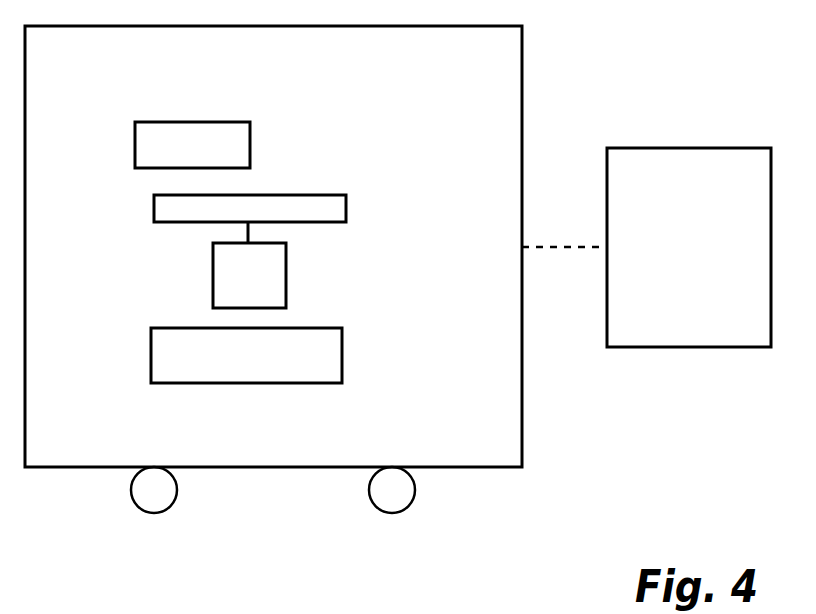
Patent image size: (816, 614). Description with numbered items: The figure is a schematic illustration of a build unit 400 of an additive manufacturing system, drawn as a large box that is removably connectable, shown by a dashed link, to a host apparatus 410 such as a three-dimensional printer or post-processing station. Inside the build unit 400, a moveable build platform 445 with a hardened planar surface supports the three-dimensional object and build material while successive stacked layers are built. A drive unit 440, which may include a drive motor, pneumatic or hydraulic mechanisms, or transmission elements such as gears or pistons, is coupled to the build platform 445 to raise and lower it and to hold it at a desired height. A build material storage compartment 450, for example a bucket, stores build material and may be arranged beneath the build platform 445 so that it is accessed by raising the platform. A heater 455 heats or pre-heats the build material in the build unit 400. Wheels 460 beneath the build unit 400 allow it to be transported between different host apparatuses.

The build unit 400 is at (253, 80).
The heater 455 is at (172, 158).
The build platform 445 is at (277, 195).
The drive unit 440 is at (286, 278).
The build material storage compartment 450 is at (227, 369).
The host apparatus 410 is at (668, 261).
The wheels 460 is at (175, 500).